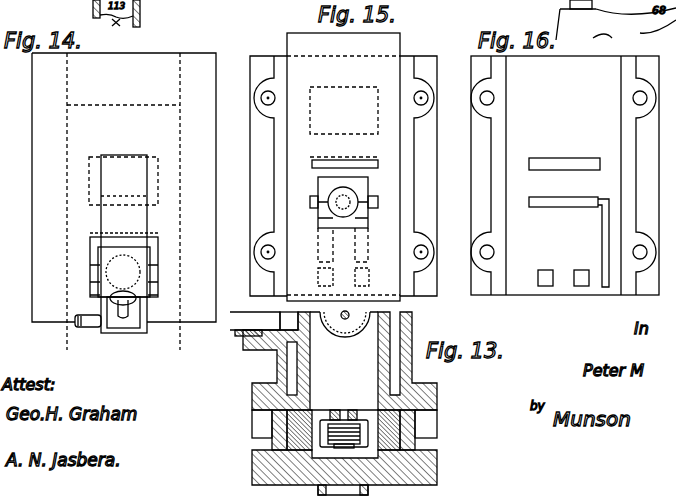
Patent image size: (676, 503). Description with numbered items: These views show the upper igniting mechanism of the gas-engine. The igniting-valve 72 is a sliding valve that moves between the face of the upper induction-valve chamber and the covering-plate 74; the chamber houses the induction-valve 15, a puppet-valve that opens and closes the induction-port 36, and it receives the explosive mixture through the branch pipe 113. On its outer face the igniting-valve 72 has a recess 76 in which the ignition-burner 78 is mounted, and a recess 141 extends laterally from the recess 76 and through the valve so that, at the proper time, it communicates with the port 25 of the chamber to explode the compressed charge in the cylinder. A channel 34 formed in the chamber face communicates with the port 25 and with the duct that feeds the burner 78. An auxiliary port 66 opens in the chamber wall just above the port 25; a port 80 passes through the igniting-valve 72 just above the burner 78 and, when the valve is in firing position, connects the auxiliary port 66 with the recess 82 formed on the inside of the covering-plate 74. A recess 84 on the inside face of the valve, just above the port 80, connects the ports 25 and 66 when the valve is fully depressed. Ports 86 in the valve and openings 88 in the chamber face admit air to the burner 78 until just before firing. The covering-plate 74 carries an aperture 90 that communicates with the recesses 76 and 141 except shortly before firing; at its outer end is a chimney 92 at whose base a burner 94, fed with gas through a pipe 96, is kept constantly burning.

In FIG. 13, the upper induction-valve 15 is at (344, 330).
In FIG. 14, the port 25 is at (131, 186).
In FIG. 16, the port 25 is at (563, 202).
In FIG. 13, the port 25 is at (344, 398).
In FIG. 16, the channel 34 is at (603, 246).
In FIG. 13, the channel 34 is at (382, 407).
In FIG. 13, the induction-port 36 is at (289, 321).
In FIG. 14, the auxiliary port 66 is at (117, 174).
In FIG. 15, the auxiliary port 66 is at (344, 150).
In FIG. 16, the auxiliary port 66 is at (564, 164).
In FIG. 14, the igniting-valve 72 is at (133, 352).
In FIG. 15, the igniting-valve 72 is at (343, 167).
In FIG. 13, the igniting-valve 72 is at (344, 430).
In FIG. 13, the covering-plate 74 is at (344, 472).
In FIG. 15, the recess 76 is at (320, 181).
In FIG. 15, the ignition-burner 78 is at (368, 214).
In FIG. 13, the ignition-burner 78 is at (356, 440).
In FIG. 14, the port 80 is at (150, 240).
In FIG. 15, the port 80 is at (366, 168).
In FIG. 13, the recess 82 is at (338, 450).
In FIG. 14, the recess 84 is at (89, 188).
In FIG. 15, the recess 84 is at (323, 100).
In FIG. 15, the ports 86 is at (355, 246).
In FIG. 15, the openings 88 is at (355, 283).
In FIG. 16, the openings 88 is at (574, 280).
In FIG. 14, the aperture 90 is at (156, 256).
In FIG. 14, the chimney 92 is at (144, 215).
In FIG. 14, the burner 94 is at (129, 310).
In FIG. 14, the pipe 96 is at (90, 327).
In FIG. 13, the branch pipe 113 is at (255, 321).
In FIG. 14, the recess 141 is at (93, 274).
In FIG. 15, the recess 141 is at (310, 202).
In FIG. 13, the recess 141 is at (314, 416).